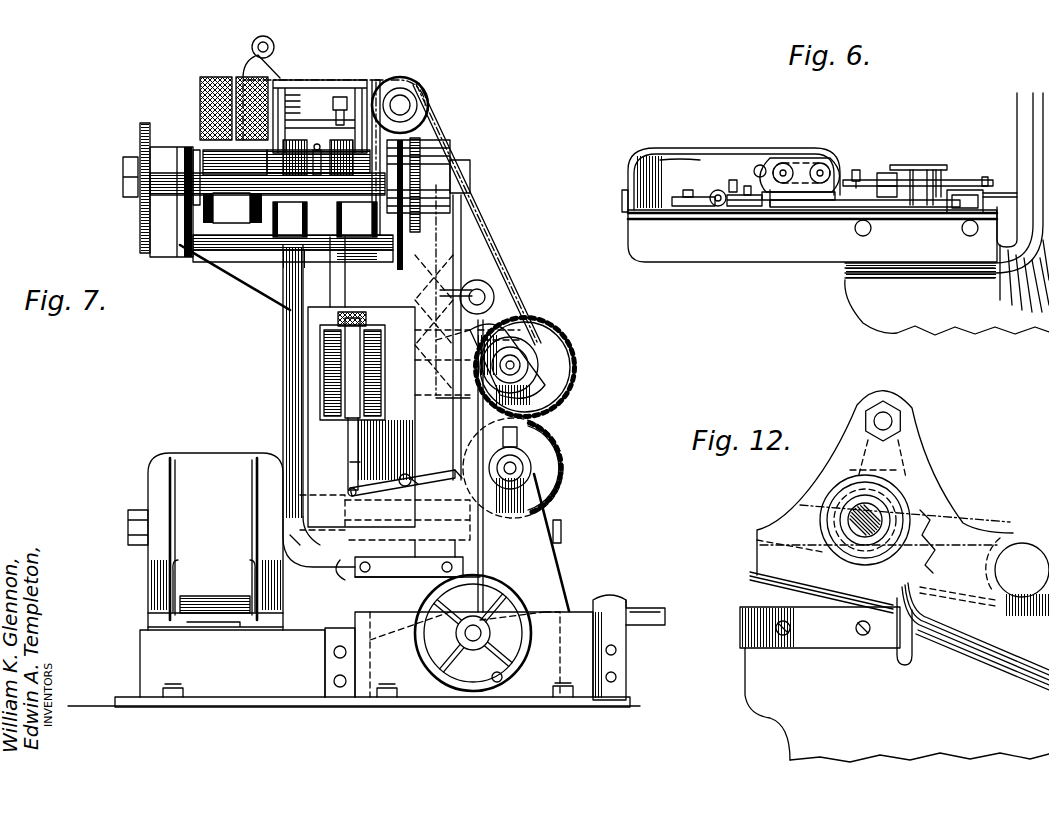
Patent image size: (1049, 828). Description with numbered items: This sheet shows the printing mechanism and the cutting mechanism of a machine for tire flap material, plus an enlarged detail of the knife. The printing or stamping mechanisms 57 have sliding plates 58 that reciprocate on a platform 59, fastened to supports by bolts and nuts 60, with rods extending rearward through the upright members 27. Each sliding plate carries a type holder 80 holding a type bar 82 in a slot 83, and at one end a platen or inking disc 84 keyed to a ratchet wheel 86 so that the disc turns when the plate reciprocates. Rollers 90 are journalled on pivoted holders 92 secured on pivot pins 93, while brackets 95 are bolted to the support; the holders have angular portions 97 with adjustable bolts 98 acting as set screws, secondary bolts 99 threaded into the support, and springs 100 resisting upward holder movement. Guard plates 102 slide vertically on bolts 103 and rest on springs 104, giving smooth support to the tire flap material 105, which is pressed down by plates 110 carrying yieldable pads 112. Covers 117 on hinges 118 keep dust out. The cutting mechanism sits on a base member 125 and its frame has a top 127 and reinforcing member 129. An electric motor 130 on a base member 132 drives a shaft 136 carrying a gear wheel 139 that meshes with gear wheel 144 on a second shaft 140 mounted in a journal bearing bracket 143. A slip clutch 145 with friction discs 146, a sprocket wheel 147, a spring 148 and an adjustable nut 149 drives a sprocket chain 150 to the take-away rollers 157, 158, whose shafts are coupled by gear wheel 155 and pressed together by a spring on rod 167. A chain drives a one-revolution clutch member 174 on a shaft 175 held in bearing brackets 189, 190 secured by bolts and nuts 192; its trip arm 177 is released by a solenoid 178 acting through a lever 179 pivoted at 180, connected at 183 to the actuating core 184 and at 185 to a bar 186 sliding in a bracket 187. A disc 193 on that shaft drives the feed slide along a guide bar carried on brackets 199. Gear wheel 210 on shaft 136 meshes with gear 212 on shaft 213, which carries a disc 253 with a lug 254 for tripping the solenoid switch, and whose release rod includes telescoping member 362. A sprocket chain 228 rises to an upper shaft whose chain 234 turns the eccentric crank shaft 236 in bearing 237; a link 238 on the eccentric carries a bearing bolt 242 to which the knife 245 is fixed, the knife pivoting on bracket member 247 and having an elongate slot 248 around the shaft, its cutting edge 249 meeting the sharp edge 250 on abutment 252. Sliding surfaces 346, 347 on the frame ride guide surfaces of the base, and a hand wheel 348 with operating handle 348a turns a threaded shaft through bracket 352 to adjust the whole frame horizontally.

In FIG. 6, the upright members 27 is at (1017, 105).
In FIG. 6, the printing or stamping mechanisms 57 is at (648, 150).
In FIG. 6, the sliding plates 58 is at (815, 207).
In FIG. 6, the platform 59 is at (695, 262).
In FIG. 6, the bolts and nuts 60 is at (960, 233).
In FIG. 6, the type holder 80 is at (962, 190).
In FIG. 6, the type bar 82 is at (883, 173).
In FIG. 6, the slot 83 is at (925, 175).
In FIG. 6, the platen or inking disc 84 is at (770, 207).
In FIG. 6, the ratchet wheel 86 is at (790, 202).
In FIG. 6, the rollers 90 is at (815, 162).
In FIG. 6, the pivoted holders 92 is at (760, 165).
In FIG. 6, the pivot pins 93 is at (688, 188).
In FIG. 6, the brackets 95 is at (693, 208).
In FIG. 6, the angular portions 97 is at (746, 207).
In FIG. 6, the adjustable bolts 98 is at (747, 186).
In FIG. 6, the secondary bolts 99 is at (732, 180).
In FIG. 6, the springs 100 is at (719, 207).
In FIG. 6, the guard plates 102 is at (865, 180).
In FIG. 6, the bolts 103 is at (855, 170).
In FIG. 6, the springs 104 is at (985, 177).
In FIG. 6, the tire flap material 105 is at (910, 165).
In FIG. 6, the plates 110 is at (936, 170).
In FIG. 6, the pads 112 is at (941, 170).
In FIG. 6, the covers 117 is at (630, 160).
In FIG. 6, the hinges 118 is at (622, 209).
In FIG. 7, the base member 125 is at (325, 663).
In FIG. 7, the platform or top 127 is at (205, 248).
In FIG. 7, the reinforcing member 129 is at (283, 330).
In FIG. 7, the electric motor 130 is at (148, 472).
In FIG. 7, the base member 132 is at (140, 650).
In FIG. 7, the shaft 136 is at (525, 456).
In FIG. 7, the gear wheel 139 is at (530, 470).
In FIG. 7, the second shaft 140 is at (562, 536).
In FIG. 7, the journal bearing bracket 143 is at (328, 572).
In FIG. 7, the gear wheel 144 is at (540, 513).
In FIG. 7, the slip clutch 145 is at (410, 522).
In FIG. 7, the friction discs 146 is at (416, 483).
In FIG. 7, the sprocket wheel 147 is at (403, 578).
In FIG. 7, the spring 148 is at (345, 510).
In FIG. 7, the adjustable nut 149 is at (290, 535).
In FIG. 7, the sprocket chain 150 is at (426, 255).
In FIG. 7, the gear wheel 155 is at (407, 88).
In FIG. 7, the take-away roller 157 is at (197, 150).
In FIG. 7, the take-away roller 158 is at (215, 77).
In FIG. 7, the rod 167 is at (292, 92).
In FIG. 7, the clutch member 174 is at (440, 162).
In FIG. 7, the shaft 175 is at (292, 237).
In FIG. 7, the trip arm 177 is at (462, 230).
In FIG. 7, the solenoid 178 is at (322, 385).
In FIG. 7, the lever 179 is at (425, 470).
In FIG. 7, the pivot 180 is at (350, 462).
In FIG. 7, the pivot 183 is at (349, 478).
In FIG. 7, the actuating core 184 is at (348, 430).
In FIG. 7, the pivot 185 is at (455, 465).
In FIG. 7, the bar 186 is at (460, 398).
In FIG. 7, the bracket 187 is at (440, 352).
In FIG. 7, the bearing bracket 189 is at (230, 258).
In FIG. 7, the bearing bracket 190 is at (345, 245).
In FIG. 7, the bolts and nuts 192 is at (283, 290).
In FIG. 7, the disc 193 is at (140, 118).
In FIG. 7, the brackets 199 is at (175, 252).
In FIG. 7, the gear wheel 210 is at (562, 459).
In FIG. 7, the gear 212 is at (558, 343).
In FIG. 7, the shaft 213 is at (514, 363).
In FIG. 7, the sprocket chain 228 is at (430, 123).
In FIG. 7, the sprocket chain 234 is at (340, 80).
In FIG. 12, the eccentric crank shaft 236 is at (880, 520).
In FIG. 12, the bearing 237 is at (925, 598).
In FIG. 12, the link 238 is at (900, 462).
In FIG. 7, the bearing bolt 242 is at (272, 44).
In FIG. 12, the bearing bolt 242 is at (893, 415).
In FIG. 7, the knife 245 is at (256, 65).
In FIG. 12, the knife 245 is at (850, 450).
In FIG. 12, the bracket member 247 is at (919, 724).
In FIG. 12, the elongate slot 248 is at (875, 512).
In FIG. 12, the cutting edge 249 is at (752, 578).
In FIG. 12, the sharp edge 250 is at (742, 601).
In FIG. 12, the abutment 252 is at (745, 655).
In FIG. 7, the disc 253 is at (540, 368).
In FIG. 7, the lug 254 is at (507, 362).
In FIG. 7, the sliding surface 346 is at (598, 600).
In FIG. 7, the sliding surface 347 is at (333, 615).
In FIG. 7, the hand wheel 348 is at (476, 691).
In FIG. 7, the operating handle 348a is at (500, 682).
In FIG. 7, the bracket 352 is at (474, 654).
In FIG. 7, the telescoping member 362 is at (492, 297).